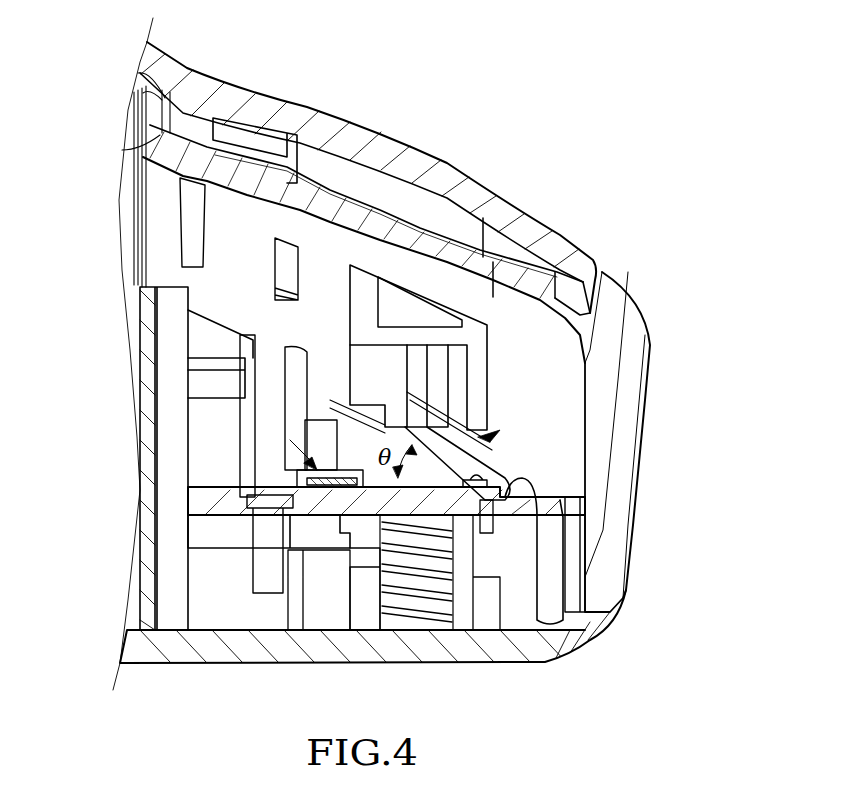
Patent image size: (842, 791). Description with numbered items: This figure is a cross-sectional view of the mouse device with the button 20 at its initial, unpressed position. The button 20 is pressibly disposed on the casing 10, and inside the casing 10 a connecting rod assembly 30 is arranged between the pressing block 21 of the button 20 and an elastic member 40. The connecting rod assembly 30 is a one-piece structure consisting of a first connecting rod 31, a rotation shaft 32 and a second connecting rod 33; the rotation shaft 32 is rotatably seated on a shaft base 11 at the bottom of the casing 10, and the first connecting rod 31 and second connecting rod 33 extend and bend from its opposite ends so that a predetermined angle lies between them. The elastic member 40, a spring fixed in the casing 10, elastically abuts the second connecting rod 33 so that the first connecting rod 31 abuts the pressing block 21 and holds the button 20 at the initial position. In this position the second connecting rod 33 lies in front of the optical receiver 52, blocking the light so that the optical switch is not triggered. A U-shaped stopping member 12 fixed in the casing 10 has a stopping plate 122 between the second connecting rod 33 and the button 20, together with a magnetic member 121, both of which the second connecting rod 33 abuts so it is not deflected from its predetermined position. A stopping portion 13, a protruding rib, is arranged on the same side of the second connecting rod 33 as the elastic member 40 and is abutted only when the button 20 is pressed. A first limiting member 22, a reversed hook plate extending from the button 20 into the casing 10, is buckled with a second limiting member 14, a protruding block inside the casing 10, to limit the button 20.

The casing 10 is at (617, 448).
The shaft base 11 is at (517, 567).
The stopping member 12 is at (310, 440).
The magnetic member 121 is at (300, 513).
The stopping plate 122 is at (300, 478).
The stopping portion 13 is at (300, 567).
The second limiting member 14 is at (195, 343).
The button 20 is at (462, 165).
The pressing block 21 is at (300, 330).
The first limiting member 22 is at (200, 383).
The connecting rod assembly 30 is at (525, 422).
The first connecting rod 31 is at (480, 413).
The rotation shaft 32 is at (522, 480).
The second connecting rod 33 is at (370, 500).
The elastic member 40 is at (415, 605).
The optical receiver 52 is at (537, 523).